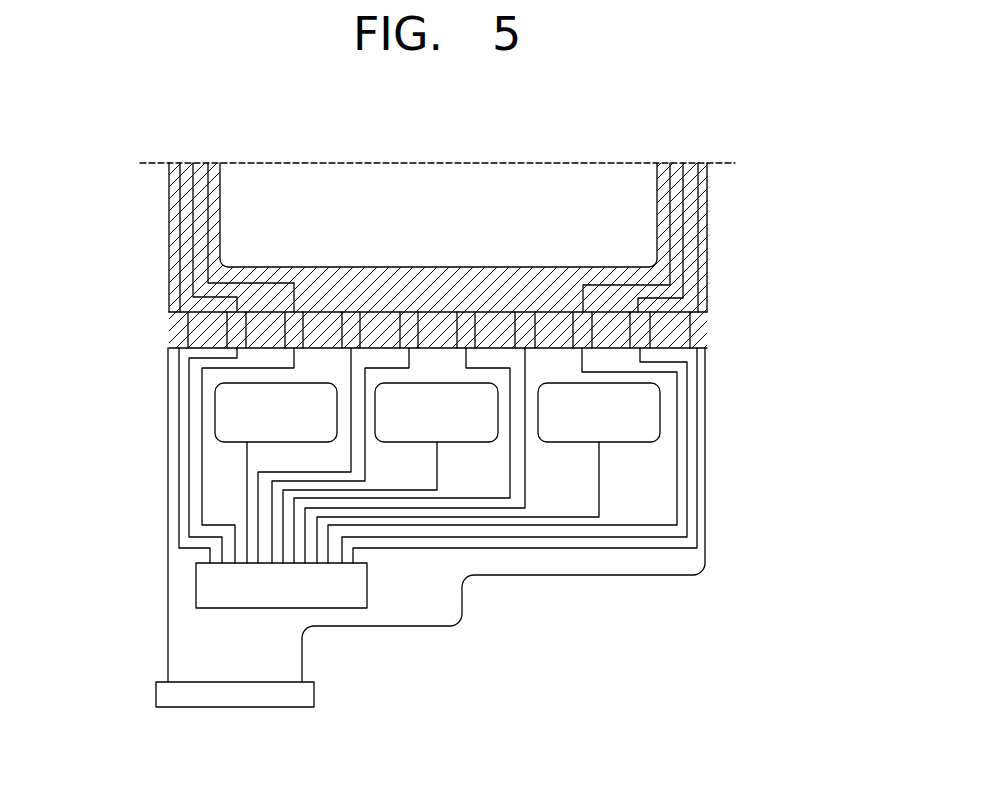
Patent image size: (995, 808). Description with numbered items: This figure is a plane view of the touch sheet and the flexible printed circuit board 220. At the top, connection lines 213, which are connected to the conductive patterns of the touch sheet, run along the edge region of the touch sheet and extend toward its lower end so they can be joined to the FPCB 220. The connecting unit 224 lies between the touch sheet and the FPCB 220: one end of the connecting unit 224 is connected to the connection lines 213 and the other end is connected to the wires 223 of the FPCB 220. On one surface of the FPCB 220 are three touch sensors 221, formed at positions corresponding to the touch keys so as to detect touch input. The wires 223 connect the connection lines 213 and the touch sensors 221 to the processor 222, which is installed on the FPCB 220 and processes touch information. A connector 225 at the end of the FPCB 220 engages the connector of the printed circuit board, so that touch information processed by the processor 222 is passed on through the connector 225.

The connection lines 213 is at (182, 234).
The flexible printed circuit board 220 is at (155, 530).
The touch sensors 221 is at (230, 421).
The processor 222 is at (208, 587).
The wires 223 is at (180, 389).
The connecting unit 224 is at (178, 333).
The connector 225 is at (168, 695).